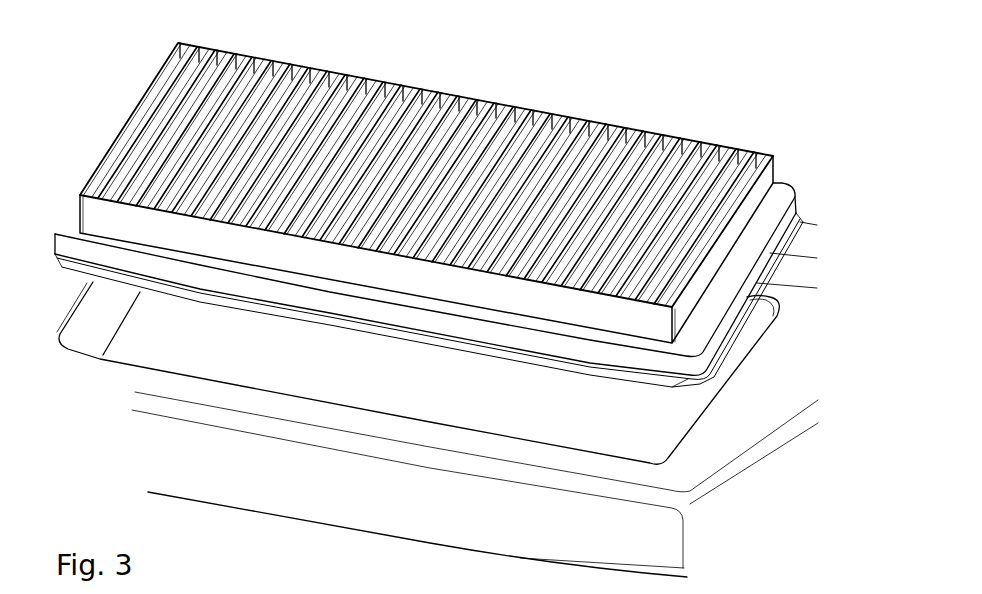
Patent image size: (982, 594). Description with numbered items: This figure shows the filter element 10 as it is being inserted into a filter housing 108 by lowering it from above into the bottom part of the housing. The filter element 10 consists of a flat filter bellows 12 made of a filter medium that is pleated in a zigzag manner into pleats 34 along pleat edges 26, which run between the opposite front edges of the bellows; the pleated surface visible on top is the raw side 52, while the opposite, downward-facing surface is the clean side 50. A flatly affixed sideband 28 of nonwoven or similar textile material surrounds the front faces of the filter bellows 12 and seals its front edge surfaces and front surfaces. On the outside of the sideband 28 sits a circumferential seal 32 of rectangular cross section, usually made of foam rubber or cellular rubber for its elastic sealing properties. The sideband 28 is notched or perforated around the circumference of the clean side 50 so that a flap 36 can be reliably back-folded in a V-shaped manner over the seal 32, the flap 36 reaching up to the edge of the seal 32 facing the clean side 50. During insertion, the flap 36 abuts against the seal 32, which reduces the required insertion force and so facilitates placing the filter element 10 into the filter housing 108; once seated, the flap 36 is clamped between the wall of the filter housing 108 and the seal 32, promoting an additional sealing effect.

The filter element 10 is at (688, 126).
The filter bellows 12 is at (442, 150).
The pleat edges 26 is at (232, 135).
The pleats 34 is at (307, 127).
The raw side 52 is at (533, 222).
The sideband 28 is at (383, 275).
The seal 32 is at (187, 278).
The flap 36 is at (232, 302).
The clean side 50 is at (486, 372).
The filter housing 108 is at (703, 470).